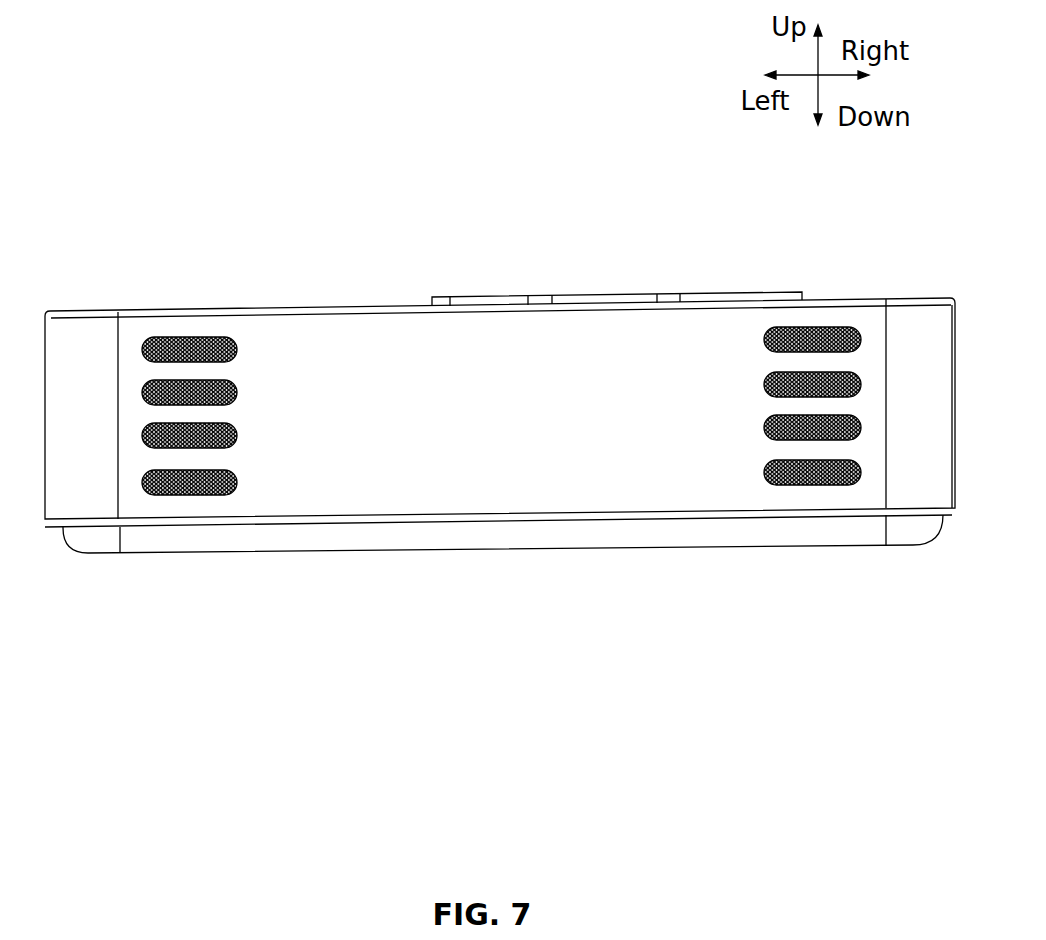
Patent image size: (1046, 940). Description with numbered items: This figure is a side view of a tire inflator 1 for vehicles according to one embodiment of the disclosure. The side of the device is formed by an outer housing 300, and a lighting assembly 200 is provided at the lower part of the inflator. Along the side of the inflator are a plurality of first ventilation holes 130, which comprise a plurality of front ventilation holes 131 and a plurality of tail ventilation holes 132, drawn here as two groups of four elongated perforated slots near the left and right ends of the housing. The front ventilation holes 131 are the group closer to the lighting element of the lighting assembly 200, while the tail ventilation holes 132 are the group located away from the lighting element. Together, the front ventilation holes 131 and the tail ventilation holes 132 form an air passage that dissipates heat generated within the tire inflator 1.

The tire inflator 1 is at (343, 598).
The first ventilation hole 130 is at (190, 192).
The front ventilation hole 131 is at (185, 382).
The tail ventilation hole 132 is at (813, 376).
The lighting assembly 200 is at (107, 542).
The outer housing 300 is at (527, 477).